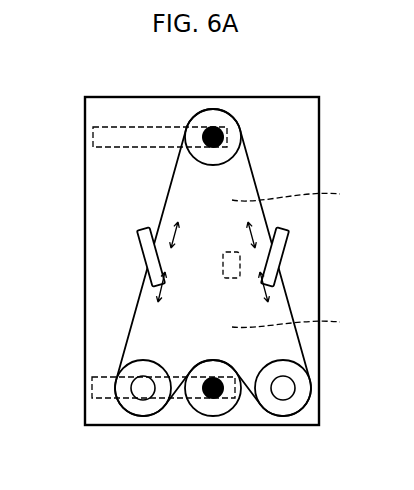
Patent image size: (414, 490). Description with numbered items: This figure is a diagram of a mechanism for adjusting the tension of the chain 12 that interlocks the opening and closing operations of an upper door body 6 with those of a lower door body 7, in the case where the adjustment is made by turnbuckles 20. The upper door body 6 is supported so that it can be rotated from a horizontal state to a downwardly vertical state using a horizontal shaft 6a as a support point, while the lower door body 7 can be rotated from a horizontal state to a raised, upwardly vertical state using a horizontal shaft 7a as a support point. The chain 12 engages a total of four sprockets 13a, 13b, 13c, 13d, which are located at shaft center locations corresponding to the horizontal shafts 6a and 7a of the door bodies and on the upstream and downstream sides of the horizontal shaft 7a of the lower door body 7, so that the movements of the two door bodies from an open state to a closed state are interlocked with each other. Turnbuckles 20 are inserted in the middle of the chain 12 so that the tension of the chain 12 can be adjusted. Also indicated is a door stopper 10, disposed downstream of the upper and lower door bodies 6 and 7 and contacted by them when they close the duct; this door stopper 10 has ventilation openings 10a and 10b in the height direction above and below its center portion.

The upper door body 6 is at (116, 128).
The horizontal shaft 6a is at (215, 128).
The lower door body 7 is at (92, 387).
The horizontal shaft 7a is at (210, 405).
The door stopper 10 is at (223, 262).
The ventilation opening 10a is at (307, 195).
The ventilation opening 10b is at (308, 323).
The chain 12 is at (164, 204).
The sprocket 13a is at (203, 155).
The sprocket 13b is at (221, 414).
The sprocket 13c is at (142, 404).
The sprocket 13d is at (297, 392).
The turnbuckle 20 is at (146, 261).